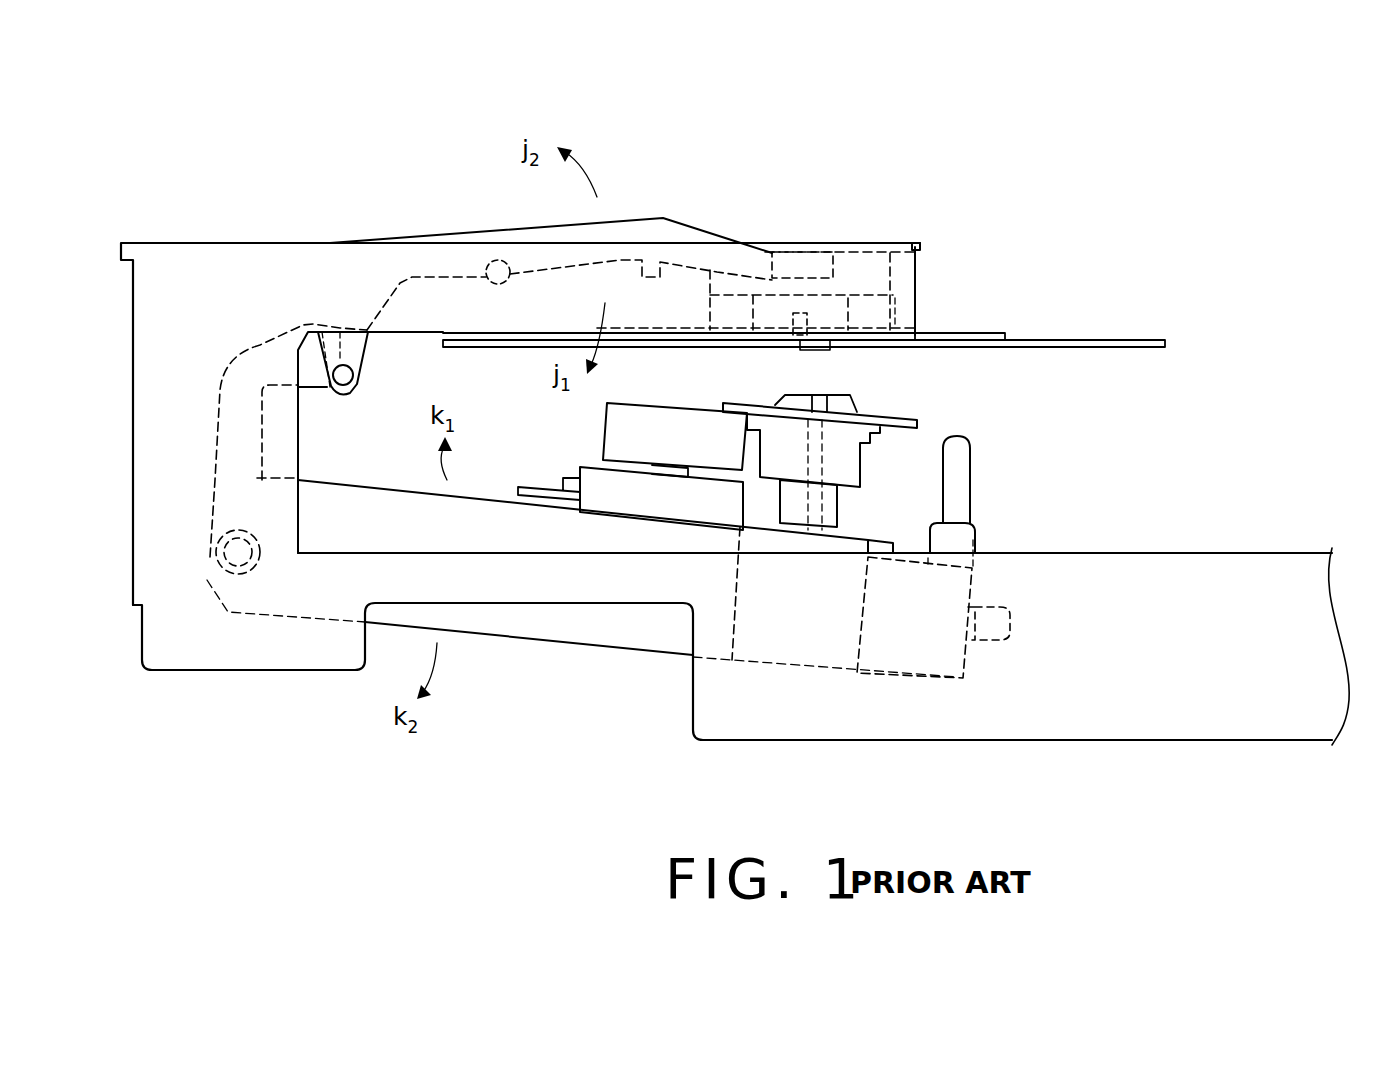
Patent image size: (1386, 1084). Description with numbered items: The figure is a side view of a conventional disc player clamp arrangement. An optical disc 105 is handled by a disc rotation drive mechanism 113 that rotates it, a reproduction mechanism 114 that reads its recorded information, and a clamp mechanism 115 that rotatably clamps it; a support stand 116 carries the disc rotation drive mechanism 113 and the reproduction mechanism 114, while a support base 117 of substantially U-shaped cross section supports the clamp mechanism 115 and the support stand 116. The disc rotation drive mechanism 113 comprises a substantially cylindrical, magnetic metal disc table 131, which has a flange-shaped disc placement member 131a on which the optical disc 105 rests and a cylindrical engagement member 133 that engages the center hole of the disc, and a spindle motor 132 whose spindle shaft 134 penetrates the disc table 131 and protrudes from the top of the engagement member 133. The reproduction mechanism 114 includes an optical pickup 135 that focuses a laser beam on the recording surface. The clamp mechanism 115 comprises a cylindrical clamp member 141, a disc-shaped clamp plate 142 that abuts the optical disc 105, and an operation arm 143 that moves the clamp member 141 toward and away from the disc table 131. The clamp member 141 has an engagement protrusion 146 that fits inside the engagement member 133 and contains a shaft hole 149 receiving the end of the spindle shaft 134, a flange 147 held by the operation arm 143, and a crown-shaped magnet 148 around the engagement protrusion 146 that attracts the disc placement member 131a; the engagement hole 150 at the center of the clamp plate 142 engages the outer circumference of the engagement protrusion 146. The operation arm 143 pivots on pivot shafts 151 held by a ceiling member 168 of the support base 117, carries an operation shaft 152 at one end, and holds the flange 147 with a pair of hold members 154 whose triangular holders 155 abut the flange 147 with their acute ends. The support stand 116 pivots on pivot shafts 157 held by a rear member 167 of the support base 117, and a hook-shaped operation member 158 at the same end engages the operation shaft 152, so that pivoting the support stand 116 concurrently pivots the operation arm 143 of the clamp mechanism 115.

The optical disc 105 is at (1117, 347).
The disc rotation drive mechanism 113 is at (918, 457).
The reproduction mechanism 114 is at (615, 444).
The clamp mechanism 115 is at (688, 196).
The support stand 116 is at (410, 505).
The support base 117 is at (1123, 712).
The disc table 131 is at (887, 438).
The disc placement member 131a is at (915, 420).
The spindle motor 132 is at (752, 635).
The engagement member 133 is at (853, 407).
The spindle shaft 134 is at (813, 346).
The optical pickup 135 is at (630, 420).
The clamp member 141 is at (858, 262).
The clamp plate 142 is at (1002, 330).
The operation arm 143 is at (623, 230).
The engagement protrusion 146 is at (815, 337).
The flange 147 is at (922, 243).
The magnet 148 is at (883, 322).
The shaft hole 149 is at (793, 347).
The engagement hole 150 is at (795, 340).
The pivot shaft 151 is at (499, 258).
The operation shaft 152 is at (345, 375).
The hold member 154 is at (703, 262).
The holder 155 is at (807, 262).
The pivot shaft 157 is at (238, 560).
The operation member 158 is at (262, 356).
The rear member 167 is at (152, 427).
The ceiling member 168 is at (927, 310).